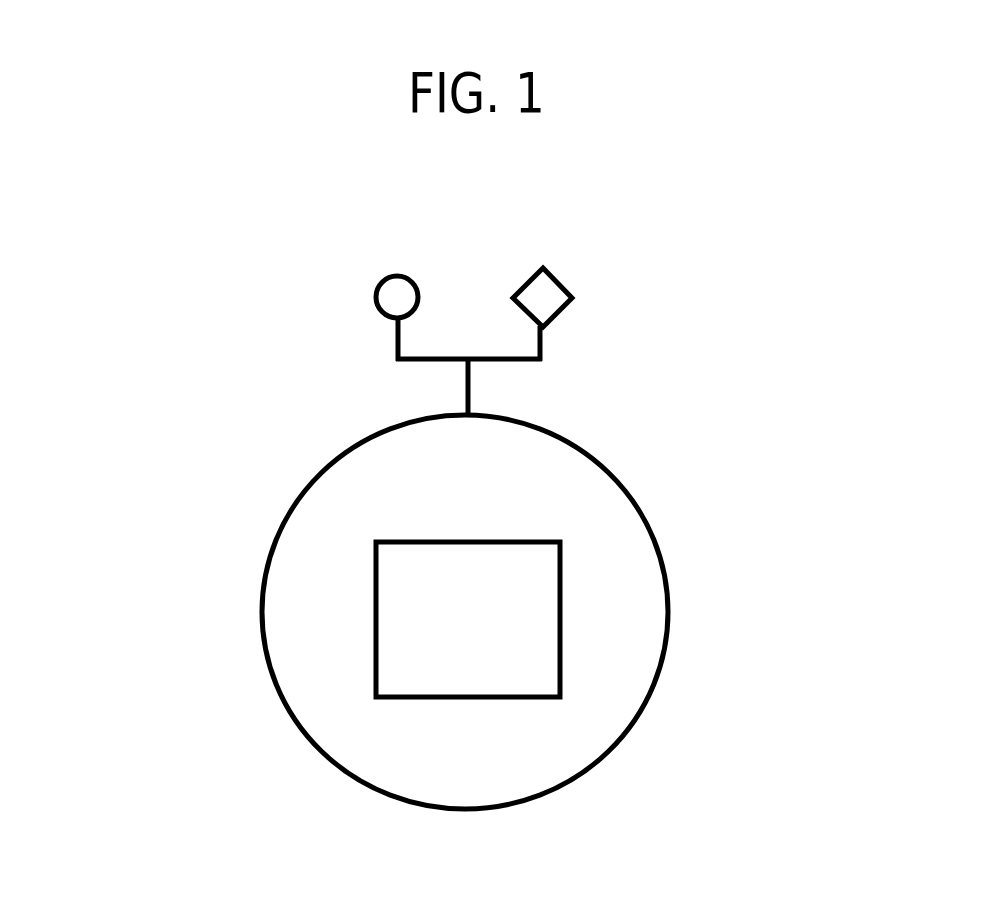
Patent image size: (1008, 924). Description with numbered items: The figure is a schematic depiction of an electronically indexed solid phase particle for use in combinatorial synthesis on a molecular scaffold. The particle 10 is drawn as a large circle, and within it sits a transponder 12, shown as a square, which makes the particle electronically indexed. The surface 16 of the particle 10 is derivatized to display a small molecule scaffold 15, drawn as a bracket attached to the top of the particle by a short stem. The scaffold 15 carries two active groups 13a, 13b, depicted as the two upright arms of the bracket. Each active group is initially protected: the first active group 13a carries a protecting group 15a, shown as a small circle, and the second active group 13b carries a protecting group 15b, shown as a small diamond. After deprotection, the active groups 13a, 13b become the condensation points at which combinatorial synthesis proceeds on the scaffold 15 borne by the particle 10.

The particle 10 is at (476, 562).
The transponder 12 is at (574, 625).
The active group 13a is at (383, 330).
The active group 13b is at (559, 348).
The small molecule scaffold 15 is at (476, 350).
The protecting group 15a is at (364, 287).
The protecting group 15b is at (583, 284).
The surface 16 is at (259, 545).